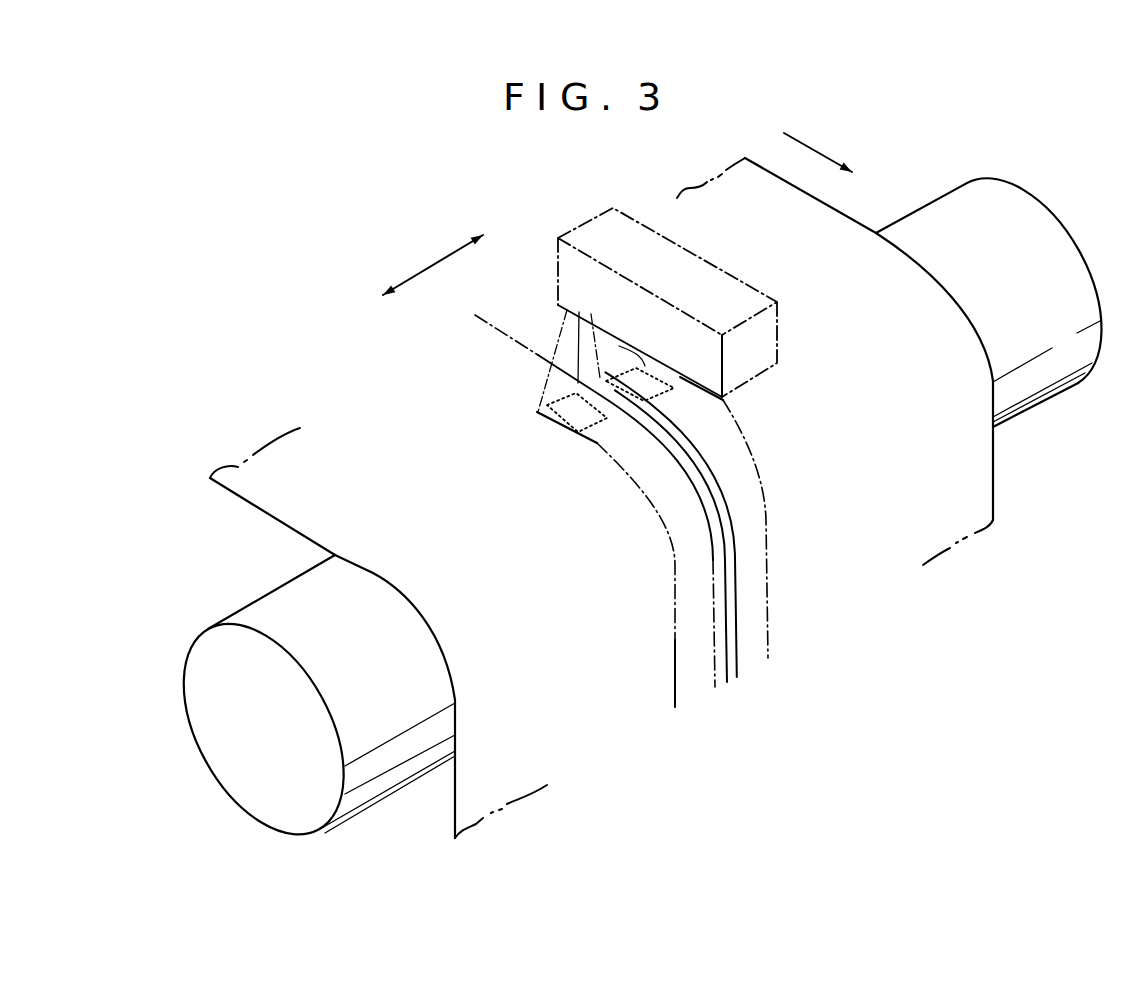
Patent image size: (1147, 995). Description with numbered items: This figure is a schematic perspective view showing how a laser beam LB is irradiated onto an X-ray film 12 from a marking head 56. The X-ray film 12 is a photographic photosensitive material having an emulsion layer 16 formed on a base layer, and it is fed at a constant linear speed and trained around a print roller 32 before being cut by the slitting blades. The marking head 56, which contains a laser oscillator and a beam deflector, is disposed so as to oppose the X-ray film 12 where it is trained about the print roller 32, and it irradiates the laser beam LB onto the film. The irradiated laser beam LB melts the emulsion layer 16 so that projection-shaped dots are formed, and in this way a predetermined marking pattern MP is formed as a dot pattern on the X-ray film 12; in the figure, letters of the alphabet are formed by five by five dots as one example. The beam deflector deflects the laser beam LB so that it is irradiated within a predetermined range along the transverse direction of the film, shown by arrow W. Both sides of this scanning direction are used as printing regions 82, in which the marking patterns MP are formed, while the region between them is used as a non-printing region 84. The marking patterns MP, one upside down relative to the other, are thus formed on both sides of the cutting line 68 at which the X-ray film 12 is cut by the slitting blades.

The X-ray film 12 is at (242, 511).
The emulsion layer 16 is at (305, 520).
The print roller 32 is at (1057, 236).
The marking head 56 is at (678, 258).
The cutting line 68 is at (704, 469).
The printing regions 82 is at (752, 543).
The non-printing region 84 is at (738, 603).
The laser beam LB is at (543, 376).
The marking pattern MP is at (613, 440).
The transverse direction W is at (423, 270).